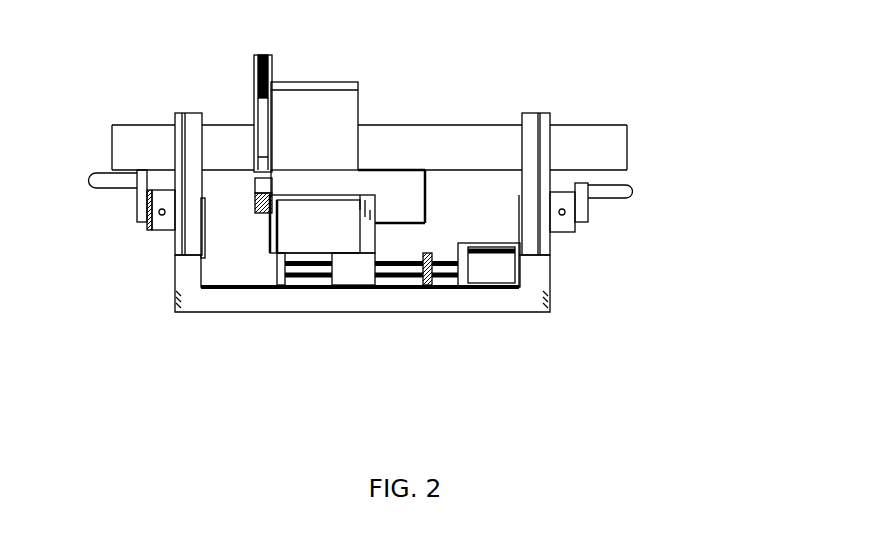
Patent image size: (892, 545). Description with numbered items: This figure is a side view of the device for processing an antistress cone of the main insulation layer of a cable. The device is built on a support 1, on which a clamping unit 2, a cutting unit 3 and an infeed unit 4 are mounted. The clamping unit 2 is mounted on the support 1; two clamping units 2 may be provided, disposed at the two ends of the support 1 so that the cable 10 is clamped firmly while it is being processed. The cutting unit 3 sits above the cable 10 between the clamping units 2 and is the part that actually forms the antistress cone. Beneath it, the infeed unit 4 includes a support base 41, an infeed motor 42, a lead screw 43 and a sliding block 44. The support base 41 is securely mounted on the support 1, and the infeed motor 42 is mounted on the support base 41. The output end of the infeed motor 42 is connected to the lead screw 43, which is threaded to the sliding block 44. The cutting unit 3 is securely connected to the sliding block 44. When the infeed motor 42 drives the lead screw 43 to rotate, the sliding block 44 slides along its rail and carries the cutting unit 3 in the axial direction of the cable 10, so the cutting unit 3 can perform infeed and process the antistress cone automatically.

The support 1 is at (200, 300).
The clamping unit 2 is at (188, 118).
The cutting unit 3 is at (285, 82).
The cable 10 is at (393, 140).
The infeed unit 4 is at (394, 316).
The support base 41 is at (285, 270).
The infeed motor 42 is at (490, 270).
The lead screw 43 is at (412, 268).
The sliding block 44 is at (348, 278).